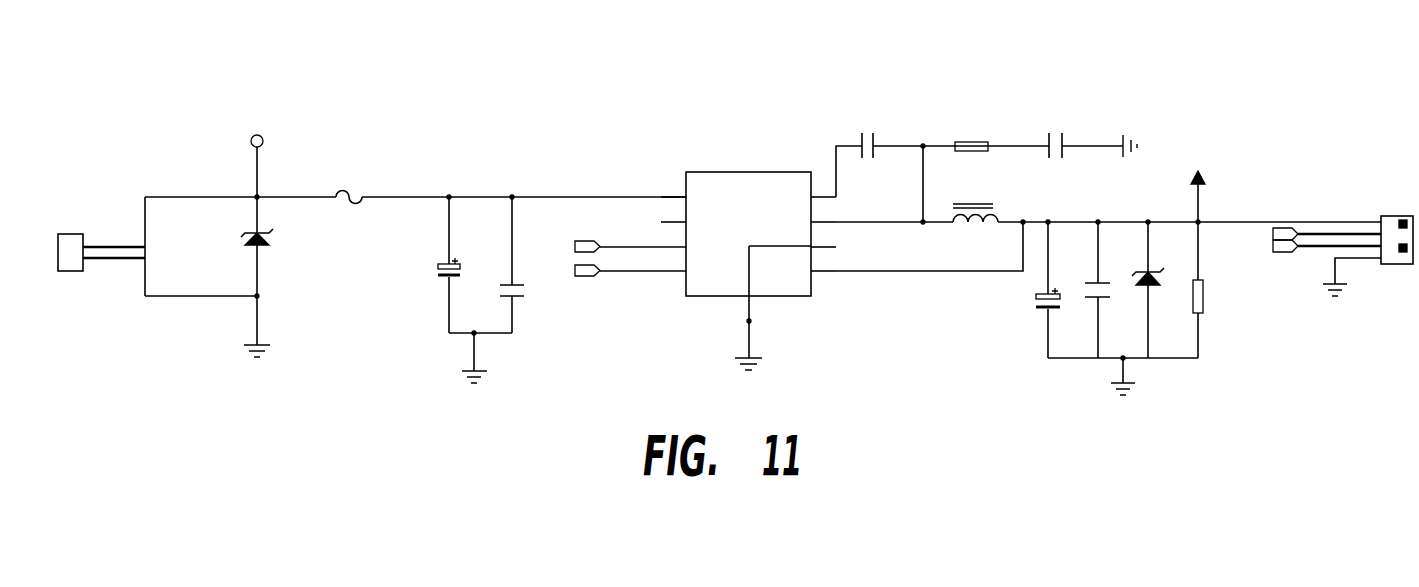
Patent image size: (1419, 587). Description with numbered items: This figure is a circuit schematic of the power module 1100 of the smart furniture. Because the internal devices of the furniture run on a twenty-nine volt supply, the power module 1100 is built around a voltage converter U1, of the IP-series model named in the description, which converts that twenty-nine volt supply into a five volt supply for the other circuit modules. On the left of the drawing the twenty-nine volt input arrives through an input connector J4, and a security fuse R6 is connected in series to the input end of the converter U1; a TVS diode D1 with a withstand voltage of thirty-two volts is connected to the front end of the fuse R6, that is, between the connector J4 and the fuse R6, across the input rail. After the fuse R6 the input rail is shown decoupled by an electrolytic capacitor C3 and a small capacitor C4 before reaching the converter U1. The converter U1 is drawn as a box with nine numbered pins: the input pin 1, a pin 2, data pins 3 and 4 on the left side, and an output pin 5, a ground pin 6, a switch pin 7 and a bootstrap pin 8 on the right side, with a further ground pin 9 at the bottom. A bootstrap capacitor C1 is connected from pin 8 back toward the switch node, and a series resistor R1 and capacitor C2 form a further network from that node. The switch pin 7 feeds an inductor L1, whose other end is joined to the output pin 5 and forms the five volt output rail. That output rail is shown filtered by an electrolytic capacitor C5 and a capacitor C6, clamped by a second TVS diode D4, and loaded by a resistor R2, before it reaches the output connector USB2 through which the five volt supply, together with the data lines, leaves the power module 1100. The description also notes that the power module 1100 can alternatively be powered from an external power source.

The power module 1100 is at (471, 90).
The input connector CON2 J4 is at (100, 268).
The TVS diode 29V D1 is at (271, 244).
The security fuse R6 is at (348, 189).
The electrolytic capacitor 100uF/35V C3 is at (421, 265).
The capacitor 104 C4 is at (502, 265).
The voltage converter U1 is at (718, 257).
The U1 pin 1 VIN 1 is at (673, 190).
The U1 pin 2 FS 2 is at (673, 215).
The U1 pin 3 DP 3 is at (643, 240).
The U1 pin 4 DM 4 is at (643, 264).
The U1 pin 5 VOUT 5 is at (823, 264).
The U1 pin 6 GND 6 is at (823, 240).
The U1 pin 7 SW 7 is at (823, 215).
The U1 pin 8 BST 8 is at (823, 190).
The U1 pin 9 GND 9 is at (742, 327).
The bootstrap capacitor 104 C1 is at (870, 138).
The resistor 2.2R R1 is at (971, 135).
The capacitor 102 C2 is at (1054, 138).
The inductor 10uH/4A L1 is at (974, 216).
The electrolytic capacitor 220uF/16V C5 is at (1015, 290).
The capacitor 106 C6 is at (1109, 290).
The TVS diode 5V D4 is at (1161, 290).
The resistor 5.1K R2 is at (1215, 270).
The USB output connector USB2 is at (1356, 250).